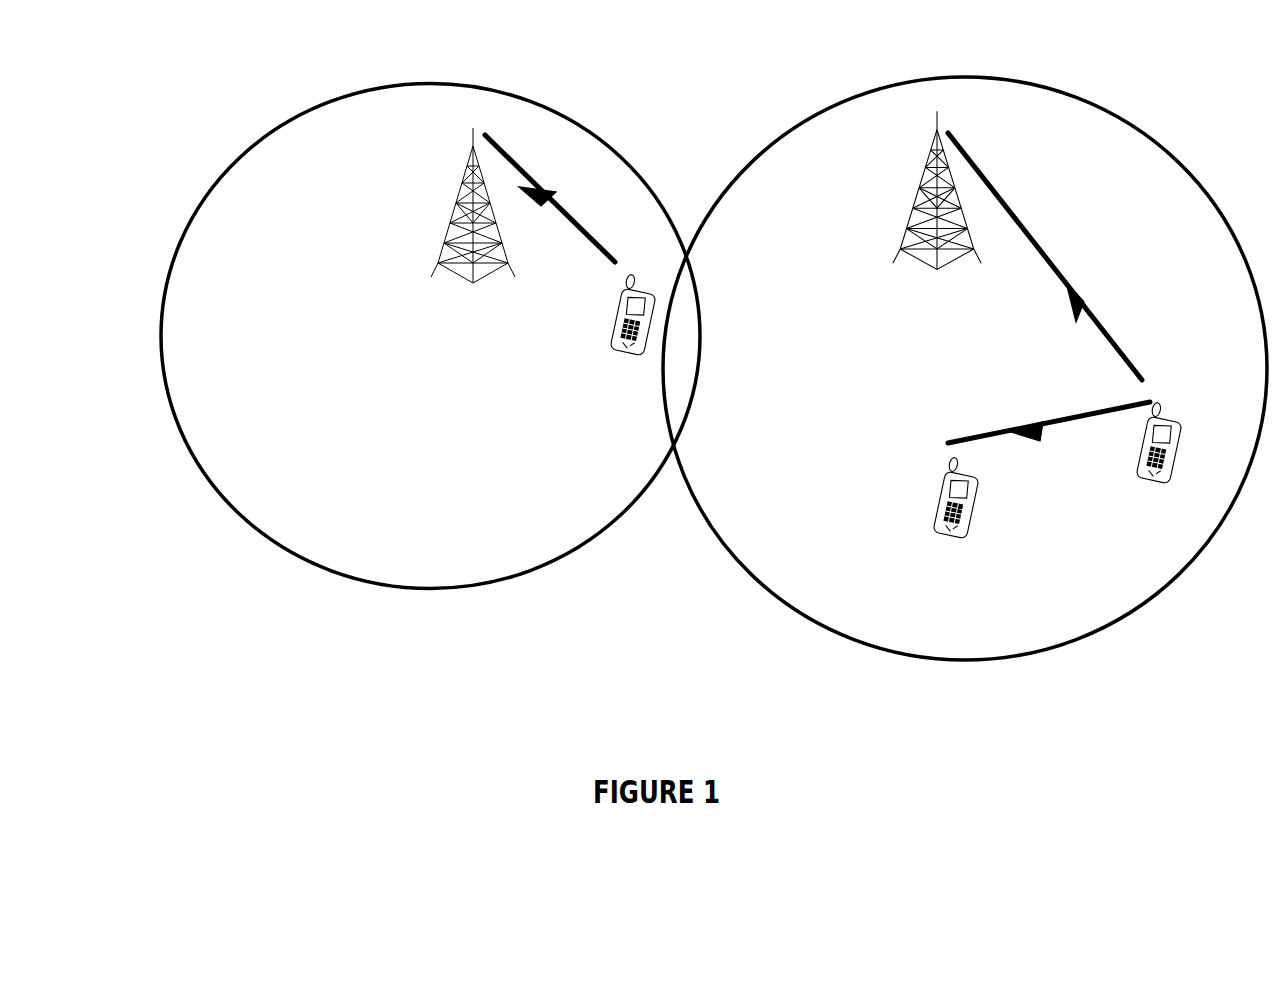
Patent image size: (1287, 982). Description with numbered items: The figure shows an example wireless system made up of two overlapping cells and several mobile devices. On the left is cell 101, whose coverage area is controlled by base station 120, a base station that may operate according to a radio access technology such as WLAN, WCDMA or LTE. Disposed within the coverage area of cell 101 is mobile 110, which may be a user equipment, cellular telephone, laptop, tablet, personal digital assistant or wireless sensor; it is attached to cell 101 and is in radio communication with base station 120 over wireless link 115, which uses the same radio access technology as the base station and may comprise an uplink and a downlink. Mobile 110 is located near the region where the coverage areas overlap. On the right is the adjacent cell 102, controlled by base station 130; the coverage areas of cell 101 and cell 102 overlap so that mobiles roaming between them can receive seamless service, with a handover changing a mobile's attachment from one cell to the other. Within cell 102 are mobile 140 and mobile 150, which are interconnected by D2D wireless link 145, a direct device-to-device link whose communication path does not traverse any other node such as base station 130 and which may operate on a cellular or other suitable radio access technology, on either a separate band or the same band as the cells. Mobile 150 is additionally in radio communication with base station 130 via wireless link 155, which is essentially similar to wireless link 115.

The cell 101 is at (430, 337).
The cell 102 is at (965, 368).
The mobile 110 is at (634, 324).
The wireless link 115 is at (550, 198).
The base station 120 is at (473, 215).
The base station 130 is at (931, 210).
The mobile 140 is at (957, 508).
The D2D wireless link 145 is at (1049, 421).
The mobile 150 is at (1160, 458).
The wireless link 155 is at (1045, 256).